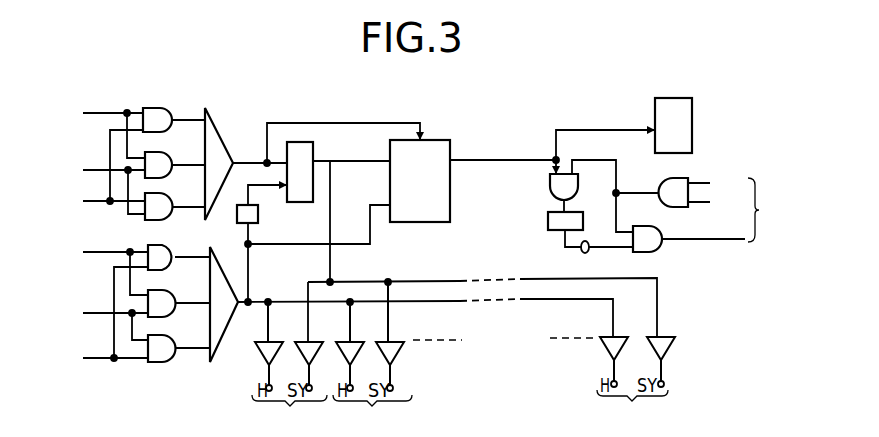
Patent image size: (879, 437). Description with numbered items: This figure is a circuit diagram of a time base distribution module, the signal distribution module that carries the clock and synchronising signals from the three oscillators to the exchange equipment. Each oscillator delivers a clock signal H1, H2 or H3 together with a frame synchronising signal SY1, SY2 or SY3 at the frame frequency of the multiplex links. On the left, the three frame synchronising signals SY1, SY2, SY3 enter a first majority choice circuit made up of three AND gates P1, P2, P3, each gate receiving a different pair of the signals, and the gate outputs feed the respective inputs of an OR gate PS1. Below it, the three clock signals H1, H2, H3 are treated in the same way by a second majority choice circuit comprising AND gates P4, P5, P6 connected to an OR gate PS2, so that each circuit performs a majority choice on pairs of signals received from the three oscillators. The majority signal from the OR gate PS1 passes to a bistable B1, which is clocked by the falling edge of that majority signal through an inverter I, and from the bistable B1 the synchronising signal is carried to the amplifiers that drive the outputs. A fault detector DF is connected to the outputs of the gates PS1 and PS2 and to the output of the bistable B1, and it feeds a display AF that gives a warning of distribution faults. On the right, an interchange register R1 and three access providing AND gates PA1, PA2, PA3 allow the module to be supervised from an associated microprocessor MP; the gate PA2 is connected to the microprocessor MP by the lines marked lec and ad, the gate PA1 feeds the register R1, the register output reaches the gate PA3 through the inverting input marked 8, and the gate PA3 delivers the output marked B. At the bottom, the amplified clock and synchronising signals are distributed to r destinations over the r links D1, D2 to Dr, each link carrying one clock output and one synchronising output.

The AND gate P1 is at (160, 110).
The AND gate P2 is at (166, 160).
The AND gate P3 is at (160, 208).
The AND gate P4 is at (166, 250).
The AND gate P5 is at (167, 297).
The AND gate P6 is at (166, 362).
The OR gate PS1 is at (213, 127).
The OR gate PS2 is at (218, 327).
The bistable B1 is at (305, 160).
The inverter I is at (252, 213).
The fault detector DF is at (428, 148).
The display AF is at (661, 125).
The access providing AND gate PA1 is at (560, 182).
The access providing AND gate PA2 is at (668, 187).
The access providing AND gate PA3 is at (652, 243).
The interchange register R1 is at (548, 218).
The inverting input 8 is at (607, 241).
The output signal B is at (701, 225).
The microprocessor MP is at (765, 210).
The read signal lec is at (726, 175).
The address signal ad is at (723, 204).
The link D1 is at (289, 412).
The link D2 is at (372, 412).
The link Dr is at (632, 407).
The frame synchronising signal SY1 is at (100, 130).
The frame synchronising signal SY2 is at (100, 186).
The frame synchronising signal SY3 is at (100, 172).
The clock signal H1 is at (105, 267).
The clock signal H2 is at (105, 321).
The clock signal H3 is at (105, 319).